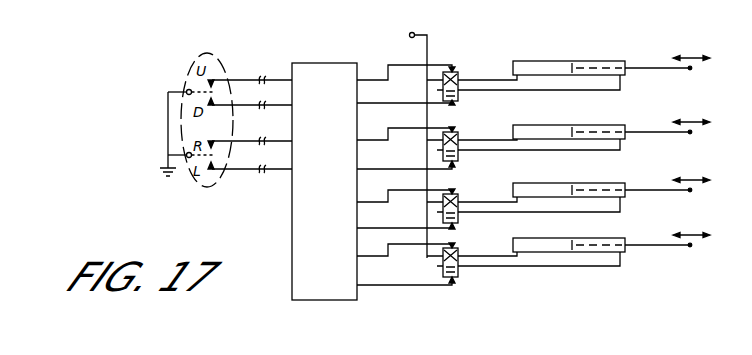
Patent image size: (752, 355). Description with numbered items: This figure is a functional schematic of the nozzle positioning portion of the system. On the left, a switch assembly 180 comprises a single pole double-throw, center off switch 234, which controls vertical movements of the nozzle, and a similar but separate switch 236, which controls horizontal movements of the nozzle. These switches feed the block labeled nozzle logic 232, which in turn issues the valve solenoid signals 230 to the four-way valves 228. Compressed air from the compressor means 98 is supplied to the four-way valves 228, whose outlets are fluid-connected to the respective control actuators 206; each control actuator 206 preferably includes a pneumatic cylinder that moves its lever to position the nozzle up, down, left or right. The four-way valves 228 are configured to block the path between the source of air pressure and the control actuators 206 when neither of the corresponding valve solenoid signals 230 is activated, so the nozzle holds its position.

The joystick switch 180 is at (207, 54).
The switch 234 is at (187, 88).
The switch 236 is at (186, 152).
The compressor means 98 is at (412, 32).
The nozzle logic 232 is at (311, 169).
The valve solenoid signals 230 is at (414, 103).
The 4-way valves 228 is at (458, 72).
The control actuator 206 is at (607, 61).